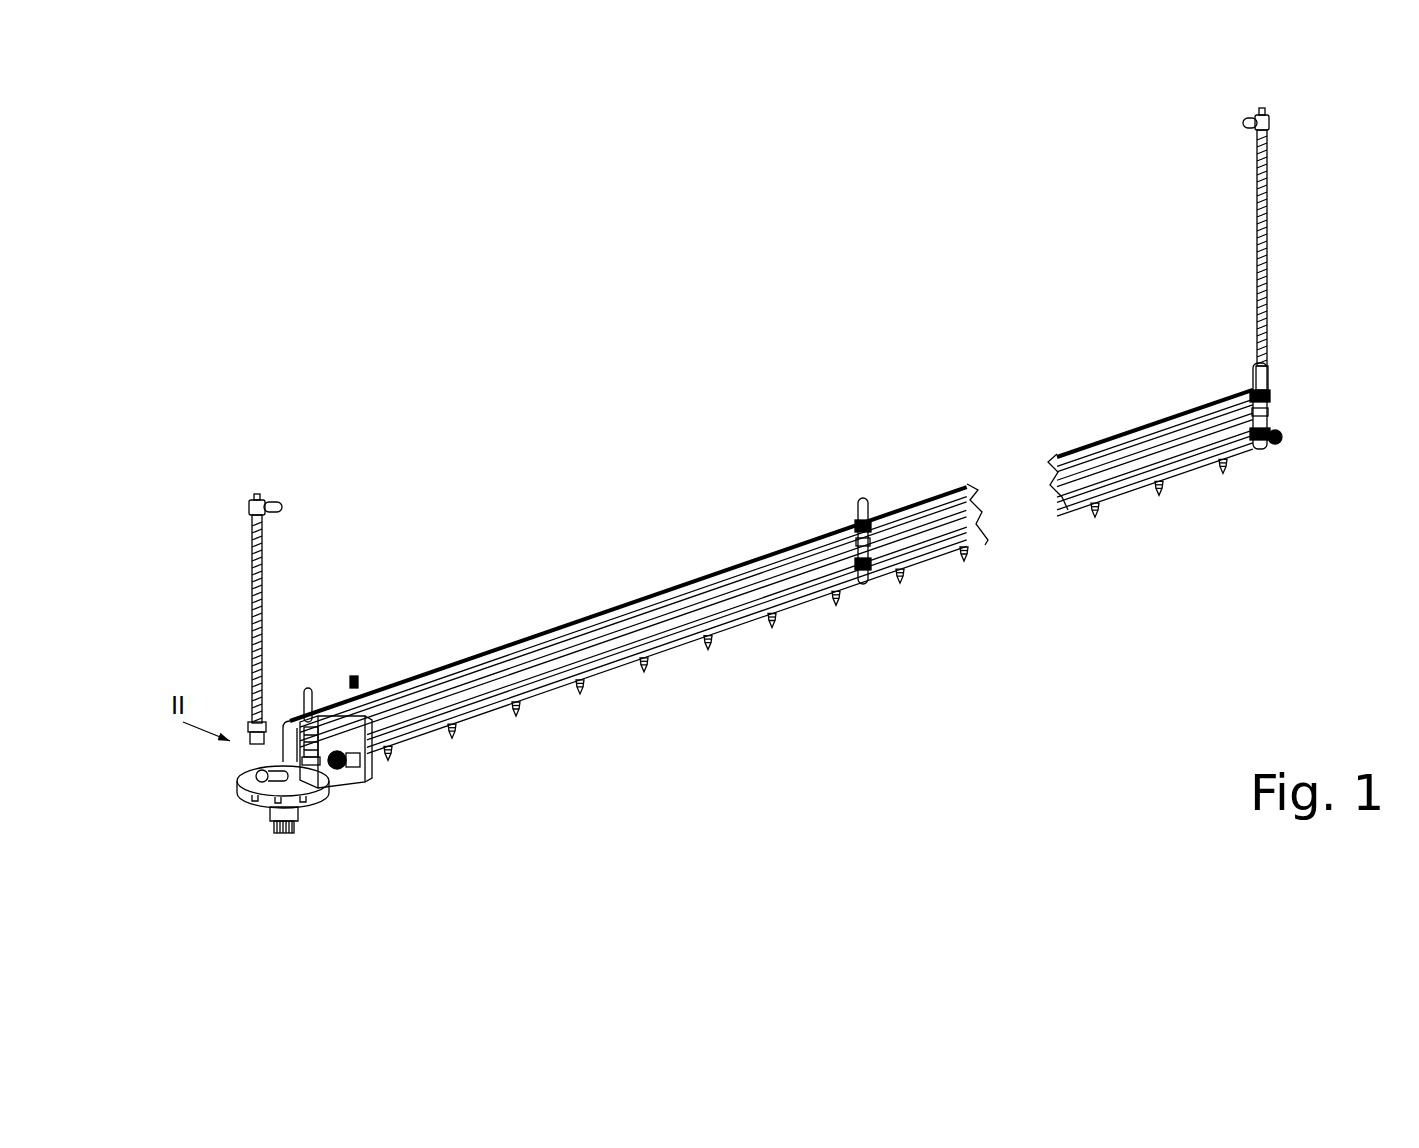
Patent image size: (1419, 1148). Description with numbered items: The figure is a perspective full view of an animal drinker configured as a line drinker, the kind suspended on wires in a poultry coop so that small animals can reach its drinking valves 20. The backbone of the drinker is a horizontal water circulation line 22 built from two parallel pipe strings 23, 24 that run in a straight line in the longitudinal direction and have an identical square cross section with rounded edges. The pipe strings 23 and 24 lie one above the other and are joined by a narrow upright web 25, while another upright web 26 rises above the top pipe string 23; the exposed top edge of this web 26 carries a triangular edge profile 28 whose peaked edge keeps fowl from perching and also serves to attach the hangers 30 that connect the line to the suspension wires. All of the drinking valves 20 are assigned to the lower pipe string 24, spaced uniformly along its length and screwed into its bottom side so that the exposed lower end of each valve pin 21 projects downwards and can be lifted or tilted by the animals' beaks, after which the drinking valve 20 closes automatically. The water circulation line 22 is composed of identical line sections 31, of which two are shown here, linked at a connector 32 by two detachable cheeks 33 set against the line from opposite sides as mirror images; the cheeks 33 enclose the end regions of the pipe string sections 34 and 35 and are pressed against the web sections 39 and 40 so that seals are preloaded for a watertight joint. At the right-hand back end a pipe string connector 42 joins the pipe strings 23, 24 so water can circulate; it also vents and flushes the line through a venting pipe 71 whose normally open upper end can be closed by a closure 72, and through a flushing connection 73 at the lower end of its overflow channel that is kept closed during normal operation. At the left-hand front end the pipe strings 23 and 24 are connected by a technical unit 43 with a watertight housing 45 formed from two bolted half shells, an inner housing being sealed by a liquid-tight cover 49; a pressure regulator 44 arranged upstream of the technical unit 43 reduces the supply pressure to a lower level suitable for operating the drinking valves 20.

The drinking valve 20 is at (576, 692).
The valve pin 21 is at (805, 639).
The water circulation line 22 is at (795, 595).
The pipe string 23 is at (776, 535).
The pipe string 24 is at (836, 655).
The upright web 25 is at (809, 569).
The upright web 26 is at (776, 544).
The edge profile 28 is at (793, 550).
The hanger 30 is at (312, 690).
The line section 31 is at (709, 677).
The connector 32 is at (360, 672).
The cheek 33 is at (878, 542).
The pipe string section 34 is at (457, 683).
The pipe string section 35 is at (420, 742).
The web section 39 is at (575, 633).
The web section 40 is at (613, 650).
The pipe string connector 42 is at (1270, 388).
The technical unit 43 is at (332, 761).
The pressure regulator 44 is at (297, 772).
The watertight housing 45 is at (335, 800).
The cover 49 is at (362, 748).
The venting pipe 71 is at (1268, 262).
The closure 72 is at (1270, 120).
The flushing connection 73 is at (1283, 437).